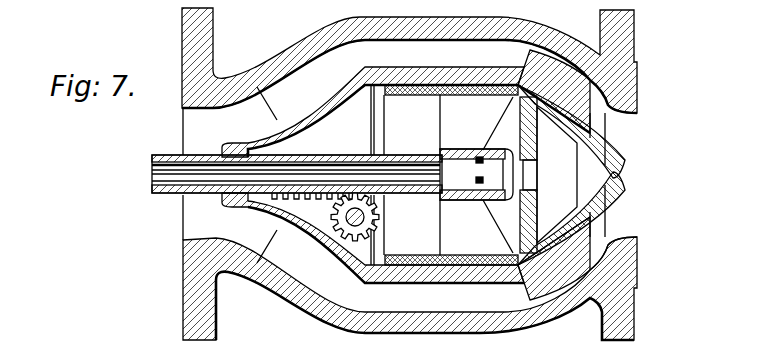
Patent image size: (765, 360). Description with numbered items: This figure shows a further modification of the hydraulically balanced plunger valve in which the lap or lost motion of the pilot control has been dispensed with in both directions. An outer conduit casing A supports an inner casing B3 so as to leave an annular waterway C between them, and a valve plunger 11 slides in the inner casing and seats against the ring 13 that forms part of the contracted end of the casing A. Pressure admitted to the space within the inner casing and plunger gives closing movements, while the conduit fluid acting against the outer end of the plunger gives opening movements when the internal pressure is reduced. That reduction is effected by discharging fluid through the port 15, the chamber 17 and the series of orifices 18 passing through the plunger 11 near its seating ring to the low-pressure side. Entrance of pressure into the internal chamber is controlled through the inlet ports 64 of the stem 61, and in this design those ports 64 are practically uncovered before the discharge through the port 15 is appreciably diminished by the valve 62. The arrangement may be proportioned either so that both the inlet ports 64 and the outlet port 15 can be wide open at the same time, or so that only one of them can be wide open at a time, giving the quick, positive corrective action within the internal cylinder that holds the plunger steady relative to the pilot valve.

The outer conduit casing A is at (503, 30).
The valve plunger 11 is at (428, 88).
The inner casing B3 is at (470, 78).
The annular waterway C is at (512, 61).
The orifices 18 is at (557, 114).
The stem 61 is at (411, 160).
The valve 62 is at (486, 152).
The port 15 is at (533, 172).
The chamber 17 is at (557, 175).
The inlet ports 64 is at (480, 164).
The ring 13 is at (628, 252).